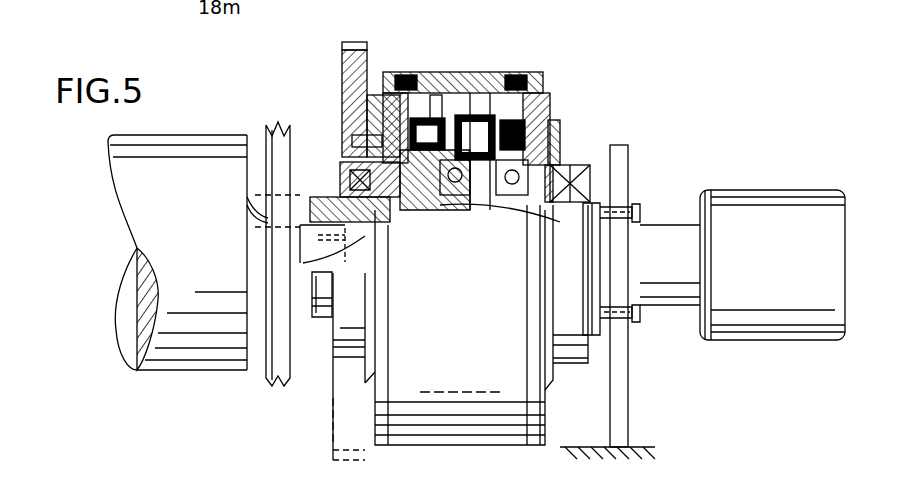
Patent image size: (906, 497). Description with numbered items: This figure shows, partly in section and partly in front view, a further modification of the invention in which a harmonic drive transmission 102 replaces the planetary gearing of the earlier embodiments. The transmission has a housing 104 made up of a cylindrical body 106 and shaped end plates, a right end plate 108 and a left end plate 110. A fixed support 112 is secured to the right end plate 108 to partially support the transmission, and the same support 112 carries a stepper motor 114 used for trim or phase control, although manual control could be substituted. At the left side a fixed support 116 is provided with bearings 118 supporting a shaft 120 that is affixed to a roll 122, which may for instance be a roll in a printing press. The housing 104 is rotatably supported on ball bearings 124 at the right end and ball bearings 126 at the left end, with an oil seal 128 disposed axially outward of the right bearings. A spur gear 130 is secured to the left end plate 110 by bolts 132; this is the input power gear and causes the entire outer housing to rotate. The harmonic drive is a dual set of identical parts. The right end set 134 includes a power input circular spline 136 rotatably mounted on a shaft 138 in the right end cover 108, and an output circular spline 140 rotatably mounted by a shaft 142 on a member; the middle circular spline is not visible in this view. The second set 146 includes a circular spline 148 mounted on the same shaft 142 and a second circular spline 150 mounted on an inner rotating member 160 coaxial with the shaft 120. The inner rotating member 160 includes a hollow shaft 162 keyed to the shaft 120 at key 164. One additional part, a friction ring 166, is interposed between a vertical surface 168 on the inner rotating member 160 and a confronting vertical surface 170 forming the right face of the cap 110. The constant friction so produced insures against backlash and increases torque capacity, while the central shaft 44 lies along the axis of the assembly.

The shaft 44 is at (488, 210).
The harmonic drive transmission 102 is at (564, 72).
The housing 104 is at (535, 395).
The cylindrical body 106 is at (505, 72).
The right end plate 108 is at (548, 105).
The left end plate 110 is at (398, 92).
The fixed support 112 is at (630, 172).
The stepper motor 114 is at (825, 195).
The fixed support 116 is at (272, 125).
The bearings 118 is at (245, 188).
The shaft 120 is at (288, 382).
The roll 122 is at (135, 218).
The ball bearings 124 is at (540, 240).
The ball bearings 126 is at (390, 215).
The oil seal 128 is at (590, 150).
The spur gear 130 is at (342, 72).
The bolts 132 is at (358, 125).
The right end set 134 is at (540, 100).
The power input circular spline 136 is at (552, 125).
The shaft 138 is at (580, 140).
The output circular spline 140 is at (520, 95).
The shaft 142 is at (480, 112).
The second set 146 is at (440, 95).
The circular spline 148 is at (510, 110).
The second circular spline 150 is at (452, 105).
The inner rotating member 160 is at (385, 225).
The hollow shaft 162 is at (395, 245).
The key 164 is at (352, 250).
The friction ring 166 is at (415, 72).
The vertical surface 168 is at (462, 210).
The vertical surface 170 is at (345, 100).